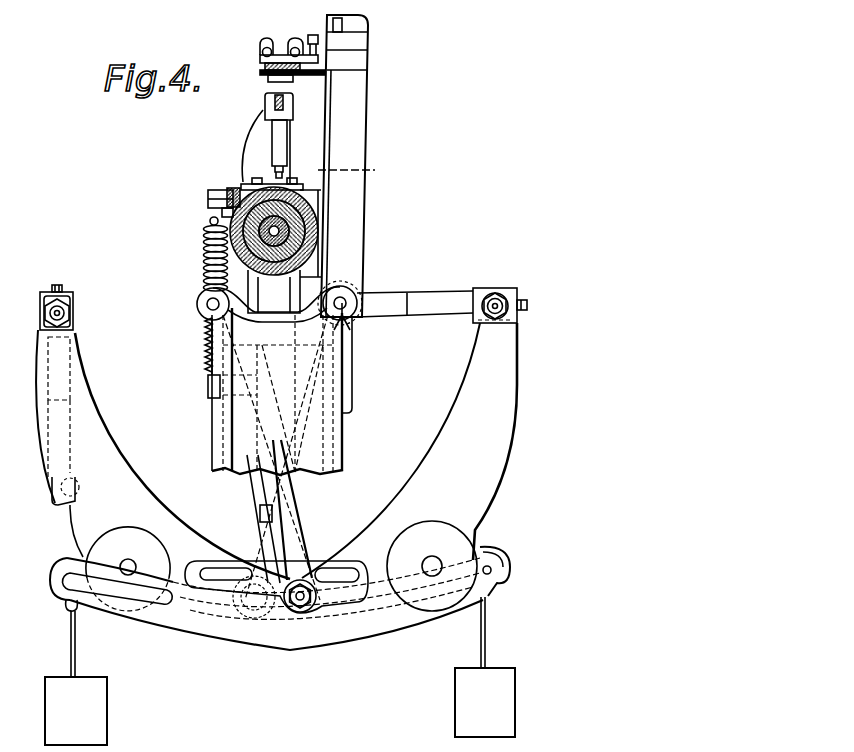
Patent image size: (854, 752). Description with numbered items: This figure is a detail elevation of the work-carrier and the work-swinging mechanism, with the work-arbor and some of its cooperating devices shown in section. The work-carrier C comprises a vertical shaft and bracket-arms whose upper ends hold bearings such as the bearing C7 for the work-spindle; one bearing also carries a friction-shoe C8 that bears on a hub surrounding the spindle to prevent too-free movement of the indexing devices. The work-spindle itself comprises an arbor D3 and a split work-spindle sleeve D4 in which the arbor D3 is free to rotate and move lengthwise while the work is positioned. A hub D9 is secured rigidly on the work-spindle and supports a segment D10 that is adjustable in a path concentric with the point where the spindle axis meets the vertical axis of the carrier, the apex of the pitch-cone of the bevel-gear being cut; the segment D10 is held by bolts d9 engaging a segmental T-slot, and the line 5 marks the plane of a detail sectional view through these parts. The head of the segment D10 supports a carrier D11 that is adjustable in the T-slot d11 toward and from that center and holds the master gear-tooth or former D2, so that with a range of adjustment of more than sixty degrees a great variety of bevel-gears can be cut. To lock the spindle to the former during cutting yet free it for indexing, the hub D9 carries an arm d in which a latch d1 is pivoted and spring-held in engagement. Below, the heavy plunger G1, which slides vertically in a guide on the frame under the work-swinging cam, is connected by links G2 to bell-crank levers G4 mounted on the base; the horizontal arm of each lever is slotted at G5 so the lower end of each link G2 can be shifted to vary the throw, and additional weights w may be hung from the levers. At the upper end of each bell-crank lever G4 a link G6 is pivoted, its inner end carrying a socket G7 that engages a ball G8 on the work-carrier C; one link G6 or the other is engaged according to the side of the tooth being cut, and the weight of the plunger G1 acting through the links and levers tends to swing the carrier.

The segment D10 is at (352, 133).
The T-slot d11 is at (343, 25).
The section line 5 is at (351, 168).
The master gear-tooth or former D2 is at (261, 45).
The carrier D11 is at (322, 45).
The latch d1 is at (274, 96).
The arm d is at (252, 136).
The friction-shoe C8 is at (248, 186).
The work-spindle sleeve D4 is at (230, 214).
The arbor D3 is at (262, 237).
The hub D9 is at (300, 226).
The bearing C7 is at (305, 210).
The work-carrier C is at (243, 517).
The bolts d9 is at (208, 200).
The socket G7 is at (216, 290).
The link G6 is at (58, 370).
The bell-crank levers G4 is at (276, 451).
The slot G5 is at (492, 578).
The links G2 is at (263, 484).
The plunger G1 is at (318, 437).
The ball G8 is at (210, 318).
The weights w is at (280, 671).